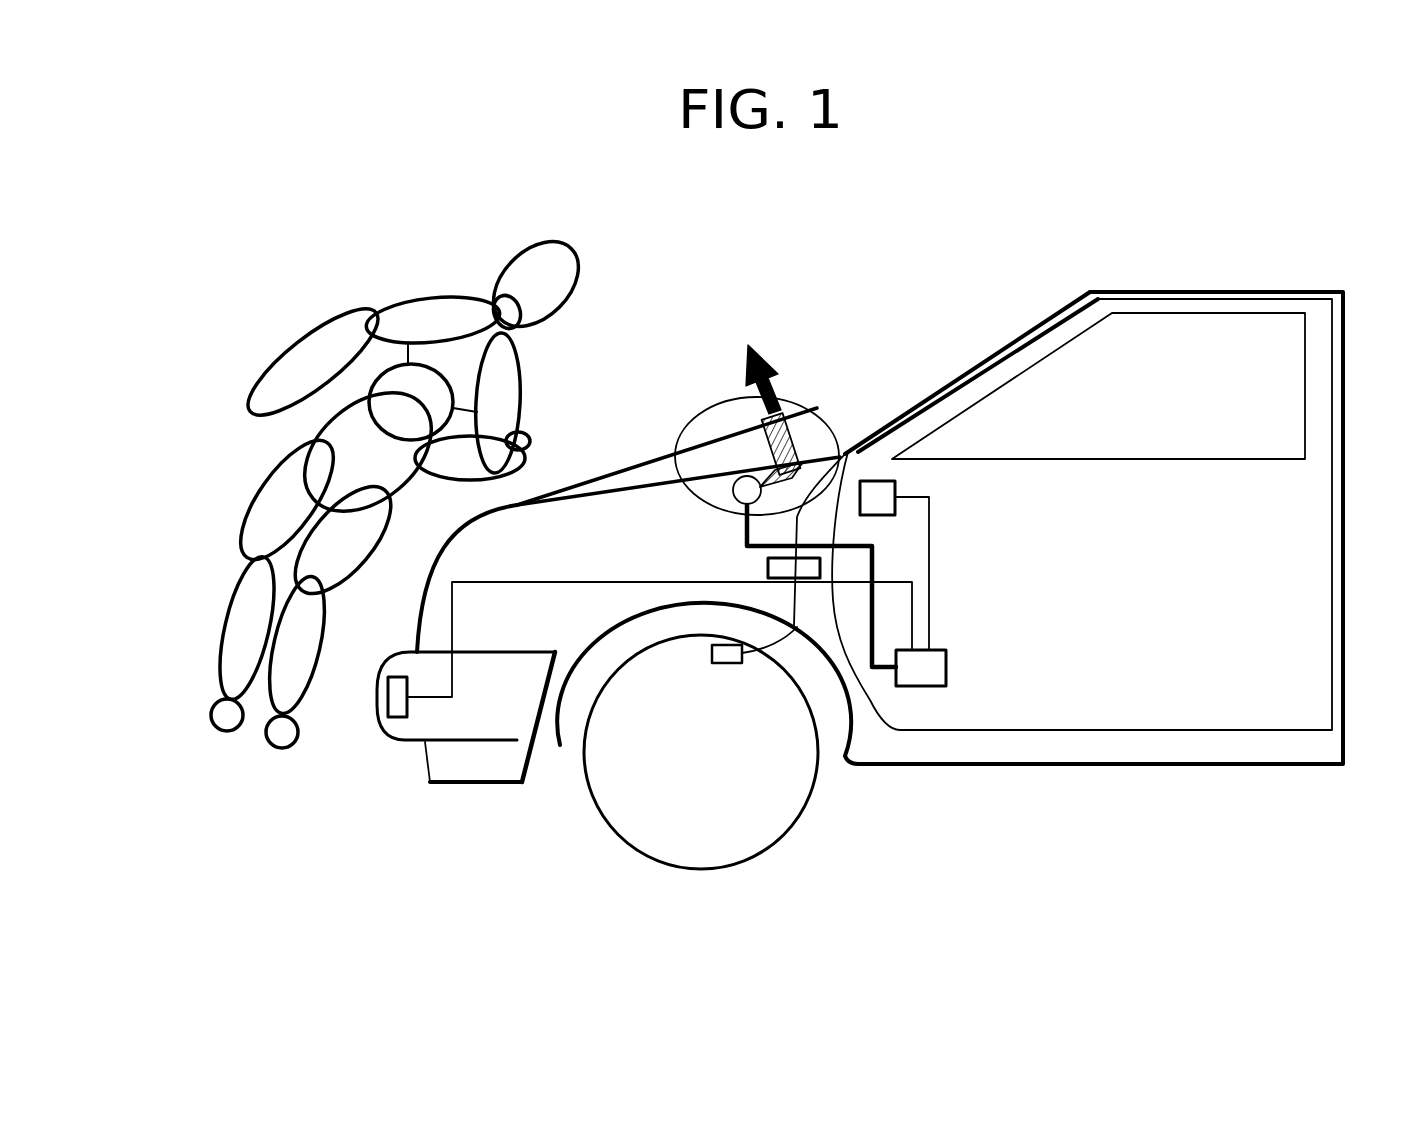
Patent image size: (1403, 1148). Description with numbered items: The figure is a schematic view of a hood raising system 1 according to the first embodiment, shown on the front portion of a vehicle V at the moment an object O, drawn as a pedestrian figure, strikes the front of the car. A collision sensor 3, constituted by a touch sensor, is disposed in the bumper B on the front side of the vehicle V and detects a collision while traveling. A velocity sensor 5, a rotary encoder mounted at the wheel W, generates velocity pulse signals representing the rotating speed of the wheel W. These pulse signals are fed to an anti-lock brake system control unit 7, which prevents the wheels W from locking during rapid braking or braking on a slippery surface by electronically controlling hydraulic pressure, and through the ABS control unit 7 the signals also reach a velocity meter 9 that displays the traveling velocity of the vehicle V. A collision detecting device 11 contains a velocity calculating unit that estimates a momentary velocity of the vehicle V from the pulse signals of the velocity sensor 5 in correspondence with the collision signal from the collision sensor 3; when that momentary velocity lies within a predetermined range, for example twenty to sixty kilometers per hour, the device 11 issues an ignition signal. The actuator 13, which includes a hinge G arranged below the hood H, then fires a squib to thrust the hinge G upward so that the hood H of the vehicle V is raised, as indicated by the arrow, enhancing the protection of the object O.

The hood raising system 1 is at (1005, 215).
The collision sensor 3 is at (398, 717).
The velocity sensor 5 is at (725, 665).
The ABS control unit 7 is at (768, 568).
The velocity meter 9 is at (876, 481).
The collision detecting device 11 is at (925, 686).
The actuator 13 is at (698, 413).
The object O is at (513, 245).
The vehicle V is at (1182, 268).
The hood H is at (627, 463).
The hinge G is at (817, 422).
The bumper B is at (522, 697).
The wheel W is at (690, 833).